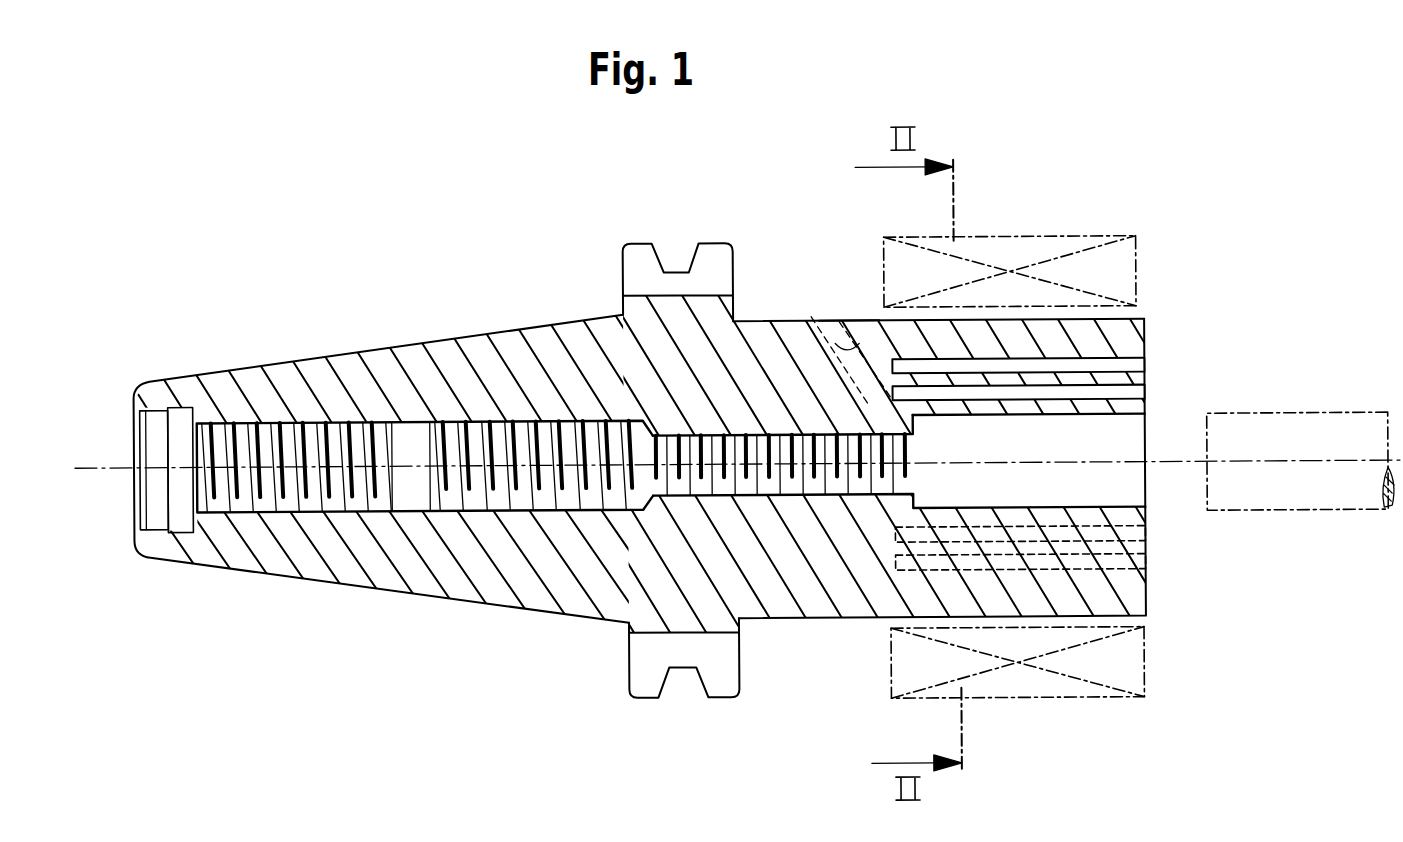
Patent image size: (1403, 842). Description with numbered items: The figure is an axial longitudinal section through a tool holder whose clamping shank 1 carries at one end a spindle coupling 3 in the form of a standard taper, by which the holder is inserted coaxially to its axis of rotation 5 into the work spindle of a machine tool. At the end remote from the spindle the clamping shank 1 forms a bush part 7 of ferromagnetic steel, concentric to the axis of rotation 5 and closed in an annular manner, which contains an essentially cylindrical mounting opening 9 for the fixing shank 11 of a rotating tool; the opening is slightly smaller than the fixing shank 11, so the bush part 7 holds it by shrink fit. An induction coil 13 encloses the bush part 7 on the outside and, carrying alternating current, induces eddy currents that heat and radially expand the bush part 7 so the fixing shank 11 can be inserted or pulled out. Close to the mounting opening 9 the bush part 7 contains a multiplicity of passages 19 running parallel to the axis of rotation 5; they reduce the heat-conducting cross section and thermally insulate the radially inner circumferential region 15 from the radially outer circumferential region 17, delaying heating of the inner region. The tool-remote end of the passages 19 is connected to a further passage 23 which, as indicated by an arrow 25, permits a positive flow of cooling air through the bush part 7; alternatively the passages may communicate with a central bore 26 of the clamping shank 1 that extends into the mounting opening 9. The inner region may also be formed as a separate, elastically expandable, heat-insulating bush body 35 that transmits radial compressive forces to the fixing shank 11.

The clamping shank 1 is at (696, 419).
The spindle coupling 3 is at (490, 612).
The axis of rotation 5 is at (92, 467).
The bush part 7 is at (1146, 334).
The mounting opening 9 is at (1146, 432).
The fixing shank 11 is at (1343, 495).
The induction coil 13 is at (1100, 249).
The radially inner circumferential region 15 is at (982, 411).
The radially outer circumferential region 17 is at (1005, 323).
The passages 19 is at (1146, 397).
The further passage 23 is at (812, 318).
The arrow 25 is at (842, 298).
The central bore 26 is at (416, 500).
The bush body 35 is at (1107, 587).